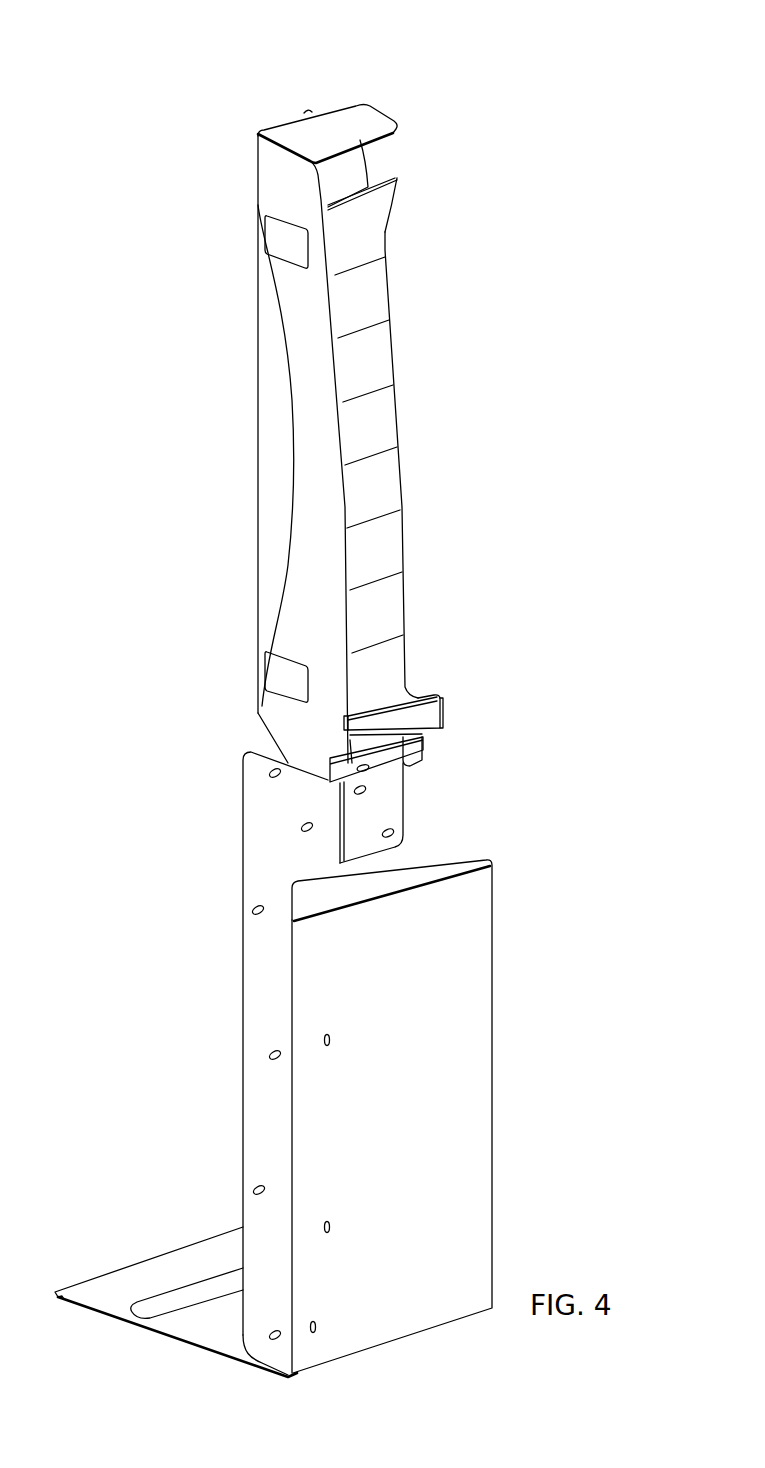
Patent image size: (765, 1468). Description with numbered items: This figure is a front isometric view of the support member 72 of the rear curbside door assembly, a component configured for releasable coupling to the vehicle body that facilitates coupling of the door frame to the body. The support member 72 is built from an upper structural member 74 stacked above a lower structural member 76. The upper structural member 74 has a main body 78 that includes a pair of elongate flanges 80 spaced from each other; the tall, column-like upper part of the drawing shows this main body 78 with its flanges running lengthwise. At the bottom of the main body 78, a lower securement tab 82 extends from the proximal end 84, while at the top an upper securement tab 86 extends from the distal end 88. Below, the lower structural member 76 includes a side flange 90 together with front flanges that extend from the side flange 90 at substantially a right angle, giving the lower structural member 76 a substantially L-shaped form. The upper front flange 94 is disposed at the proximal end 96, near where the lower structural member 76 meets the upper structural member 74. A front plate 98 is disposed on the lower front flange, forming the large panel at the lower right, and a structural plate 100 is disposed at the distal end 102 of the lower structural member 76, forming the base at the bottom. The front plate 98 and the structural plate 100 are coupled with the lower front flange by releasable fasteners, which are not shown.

The support member 72 is at (206, 64).
The upper structural member 74 is at (428, 344).
The lower structural member 76 is at (179, 1016).
The main body 78 is at (388, 467).
The elongate flanges 80 is at (268, 410).
The lower securement tab 82 is at (430, 712).
The proximal end 84 is at (236, 726).
The upper securement tab 86 is at (335, 118).
The distal end 88 is at (409, 149).
The side flange 90 is at (252, 845).
The upper front flange 94 is at (395, 805).
The proximal end 96 is at (446, 842).
The front plate 98 is at (480, 1037).
The structural plate 100 is at (130, 1277).
The distal end 102 is at (173, 1177).